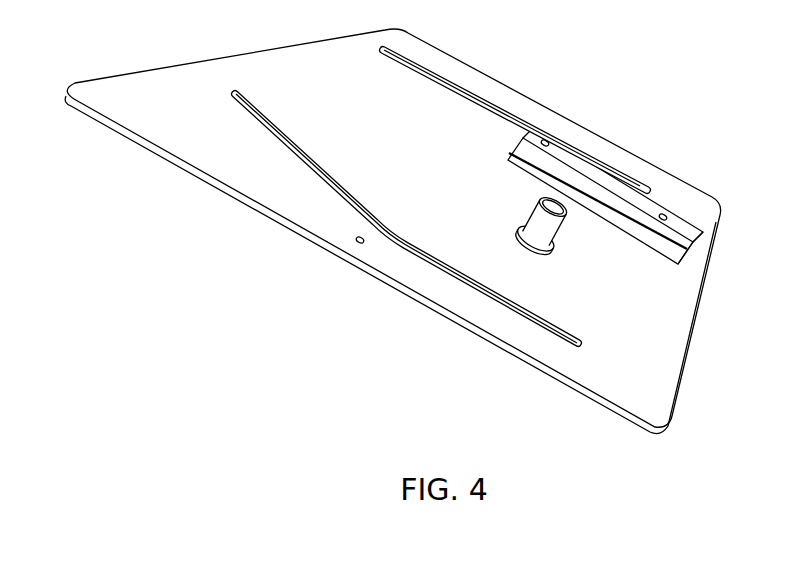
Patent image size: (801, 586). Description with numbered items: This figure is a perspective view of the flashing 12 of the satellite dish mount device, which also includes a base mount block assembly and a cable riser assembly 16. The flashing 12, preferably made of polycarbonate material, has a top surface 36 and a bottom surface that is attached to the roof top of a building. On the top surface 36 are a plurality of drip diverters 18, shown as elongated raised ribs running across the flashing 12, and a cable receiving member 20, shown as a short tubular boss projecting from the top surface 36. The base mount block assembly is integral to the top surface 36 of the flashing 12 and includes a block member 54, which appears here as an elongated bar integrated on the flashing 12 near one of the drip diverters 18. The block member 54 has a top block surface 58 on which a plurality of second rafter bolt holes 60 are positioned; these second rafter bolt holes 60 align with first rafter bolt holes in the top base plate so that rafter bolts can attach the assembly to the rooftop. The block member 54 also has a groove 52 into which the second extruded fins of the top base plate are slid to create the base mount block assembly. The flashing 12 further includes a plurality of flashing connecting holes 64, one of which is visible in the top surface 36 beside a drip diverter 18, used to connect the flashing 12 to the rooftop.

The flashing 12 is at (172, 163).
The cable riser assembly 16 is at (660, 88).
The drip diverters 18 is at (443, 78).
The cable receiving member 20 is at (563, 240).
The top surface 36 is at (389, 162).
The groove 52 is at (667, 250).
The block member 54 is at (700, 222).
The top block surface 58 is at (573, 158).
The second rafter bolt holes 60 is at (663, 208).
The flashing connecting holes 64 is at (355, 240).